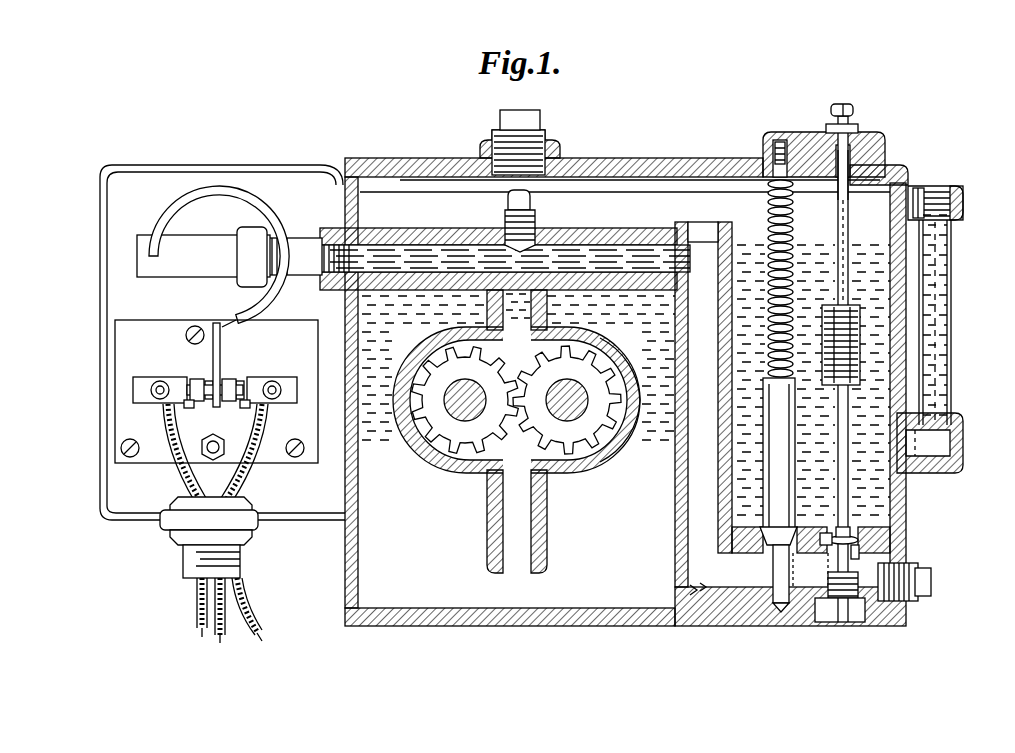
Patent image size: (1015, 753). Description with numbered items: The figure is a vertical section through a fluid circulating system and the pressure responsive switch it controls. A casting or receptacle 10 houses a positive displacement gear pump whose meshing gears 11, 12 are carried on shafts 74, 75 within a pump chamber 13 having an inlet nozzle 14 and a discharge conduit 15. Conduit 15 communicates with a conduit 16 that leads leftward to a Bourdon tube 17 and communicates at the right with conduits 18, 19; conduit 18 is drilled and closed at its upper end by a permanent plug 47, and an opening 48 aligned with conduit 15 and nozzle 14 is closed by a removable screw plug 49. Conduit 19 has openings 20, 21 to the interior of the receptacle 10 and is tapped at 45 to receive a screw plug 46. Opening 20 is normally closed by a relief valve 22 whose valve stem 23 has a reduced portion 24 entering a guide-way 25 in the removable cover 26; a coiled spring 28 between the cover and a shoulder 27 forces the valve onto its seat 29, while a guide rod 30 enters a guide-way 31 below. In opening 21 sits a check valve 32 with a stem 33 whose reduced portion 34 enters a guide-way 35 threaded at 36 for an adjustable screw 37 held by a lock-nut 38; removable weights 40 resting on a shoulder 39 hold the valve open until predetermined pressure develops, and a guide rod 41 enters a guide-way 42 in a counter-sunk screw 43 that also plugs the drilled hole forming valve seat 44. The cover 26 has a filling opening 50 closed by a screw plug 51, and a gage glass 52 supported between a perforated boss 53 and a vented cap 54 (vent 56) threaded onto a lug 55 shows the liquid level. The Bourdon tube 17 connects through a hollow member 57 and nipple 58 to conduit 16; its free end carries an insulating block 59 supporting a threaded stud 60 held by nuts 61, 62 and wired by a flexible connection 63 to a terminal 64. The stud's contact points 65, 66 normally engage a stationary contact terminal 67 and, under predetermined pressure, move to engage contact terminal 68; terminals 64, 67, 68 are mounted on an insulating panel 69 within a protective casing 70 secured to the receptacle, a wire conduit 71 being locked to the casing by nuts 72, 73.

The casting or receptacle 10 is at (437, 627).
The gear 11 is at (630, 432).
The gear 12 is at (396, 408).
The pump chamber 13 is at (608, 462).
The inlet nozzle 14 is at (522, 572).
The discharge conduit 15 is at (540, 306).
The conduit 16 is at (594, 243).
The Bourdon tube 17 is at (172, 210).
The conduit 18 is at (675, 508).
The conduit 19 is at (746, 535).
The opening 20 is at (803, 570).
The opening 21 is at (856, 559).
The relief valve 22 is at (795, 530).
The valve stem 23 is at (790, 478).
The reduced portion 24 is at (797, 160).
The guide-way 25 is at (780, 142).
The removable cover 26 is at (742, 160).
The shoulder 27 is at (790, 395).
The coiled spring 28 is at (793, 226).
The seat 29 is at (828, 533).
The guide rod 30 is at (773, 573).
The guide-way 31 is at (778, 624).
The check valve 32 is at (822, 570).
The stem 33 is at (848, 470).
The reduced portion 34 is at (848, 222).
The guide-way 35 is at (838, 190).
The screw thread 36 is at (866, 163).
The adjustable screw 37 is at (853, 110).
The lock-nut 38 is at (858, 128).
The shoulder 39 is at (838, 385).
The removable weights or disks 40 is at (852, 385).
The guide rod 41 is at (858, 582).
The guide-way 42 is at (855, 622).
The counter-sunk screw 43 is at (822, 622).
The valve seat 44 is at (852, 536).
The tapped portion 45 is at (905, 601).
The screw plug 46 is at (926, 568).
The permanent plug 47 is at (708, 225).
The opening 48 is at (540, 231).
The removable screw plug 49 is at (530, 201).
The filling opening 50 is at (508, 170).
The removable screw plug 51 is at (540, 122).
The gage glass 52 is at (951, 378).
The perforated hollow boss or lug 53 is at (963, 446).
The cap 54 is at (945, 186).
The lug or projection 55 is at (951, 189).
The vent 56 is at (924, 186).
The hollow member 57 is at (170, 270).
The nipple 58 is at (300, 238).
The block or strip of insulation 59 is at (221, 355).
The threaded stud 60 is at (207, 381).
The nut 61 is at (230, 379).
The nut 62 is at (205, 379).
The flexible connection 63 is at (212, 432).
The terminal 64 is at (226, 446).
The contact point 65 is at (245, 408).
The contact point 66 is at (190, 408).
The stationary contact terminal 67 is at (188, 380).
The contact terminal 68 is at (256, 372).
The insulating panel 69 is at (312, 463).
The housing or protective casing 70 is at (100, 458).
The wire conduit 71 is at (183, 562).
The nut 72 is at (255, 506).
The nut 73 is at (252, 538).
The shaft 74 is at (567, 388).
The shaft 75 is at (472, 388).